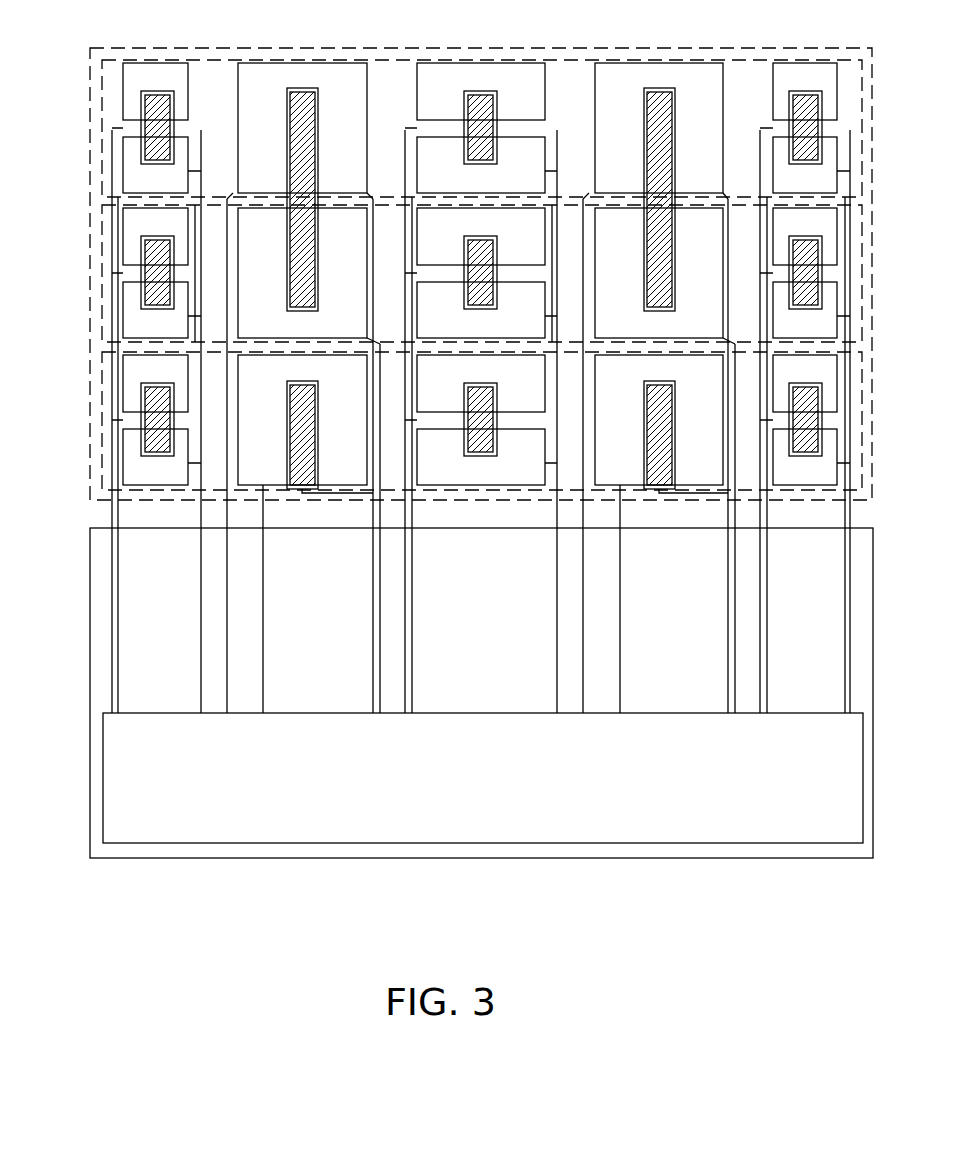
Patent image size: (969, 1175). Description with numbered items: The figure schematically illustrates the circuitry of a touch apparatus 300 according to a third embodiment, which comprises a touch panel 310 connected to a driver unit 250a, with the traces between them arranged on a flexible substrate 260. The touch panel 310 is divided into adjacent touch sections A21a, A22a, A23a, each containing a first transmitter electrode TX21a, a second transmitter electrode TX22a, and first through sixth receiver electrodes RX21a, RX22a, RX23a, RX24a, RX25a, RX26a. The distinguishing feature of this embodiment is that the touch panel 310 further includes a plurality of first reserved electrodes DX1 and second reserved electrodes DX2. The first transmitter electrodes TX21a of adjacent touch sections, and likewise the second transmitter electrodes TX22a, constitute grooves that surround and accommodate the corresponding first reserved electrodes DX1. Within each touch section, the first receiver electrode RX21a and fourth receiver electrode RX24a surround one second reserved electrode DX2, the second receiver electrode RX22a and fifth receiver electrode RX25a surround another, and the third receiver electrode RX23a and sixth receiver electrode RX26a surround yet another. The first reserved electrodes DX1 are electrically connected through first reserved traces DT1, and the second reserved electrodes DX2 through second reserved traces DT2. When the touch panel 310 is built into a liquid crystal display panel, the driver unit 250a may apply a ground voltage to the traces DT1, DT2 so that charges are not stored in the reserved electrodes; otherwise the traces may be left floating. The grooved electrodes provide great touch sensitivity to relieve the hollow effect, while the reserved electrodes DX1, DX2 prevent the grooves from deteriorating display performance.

The touch panel 310 is at (90, 51).
The touch apparatus 300 is at (852, 912).
The flexible substrate 260 is at (172, 858).
The driver unit 250a is at (620, 843).
The touch section A21a is at (102, 128).
The touch section A22a is at (102, 273).
The touch section A23a is at (102, 418).
The first reserved traces DT1 is at (227, 200).
The second reserved traces DT2 is at (117, 170).
The first reserved electrodes DX1 is at (290, 108).
The second reserved electrodes DX2 is at (143, 110).
The first receiver electrode RX21a is at (155, 259).
The second receiver electrode RX22a is at (481, 259).
The third receiver electrode RX23a is at (805, 259).
The fourth receiver electrode RX24a is at (155, 311).
The fifth receiver electrode RX25a is at (481, 311).
The sixth receiver electrode RX26a is at (805, 311).
The first transmitter electrode TX21a is at (305, 278).
The second transmitter electrode TX22a is at (661, 278).